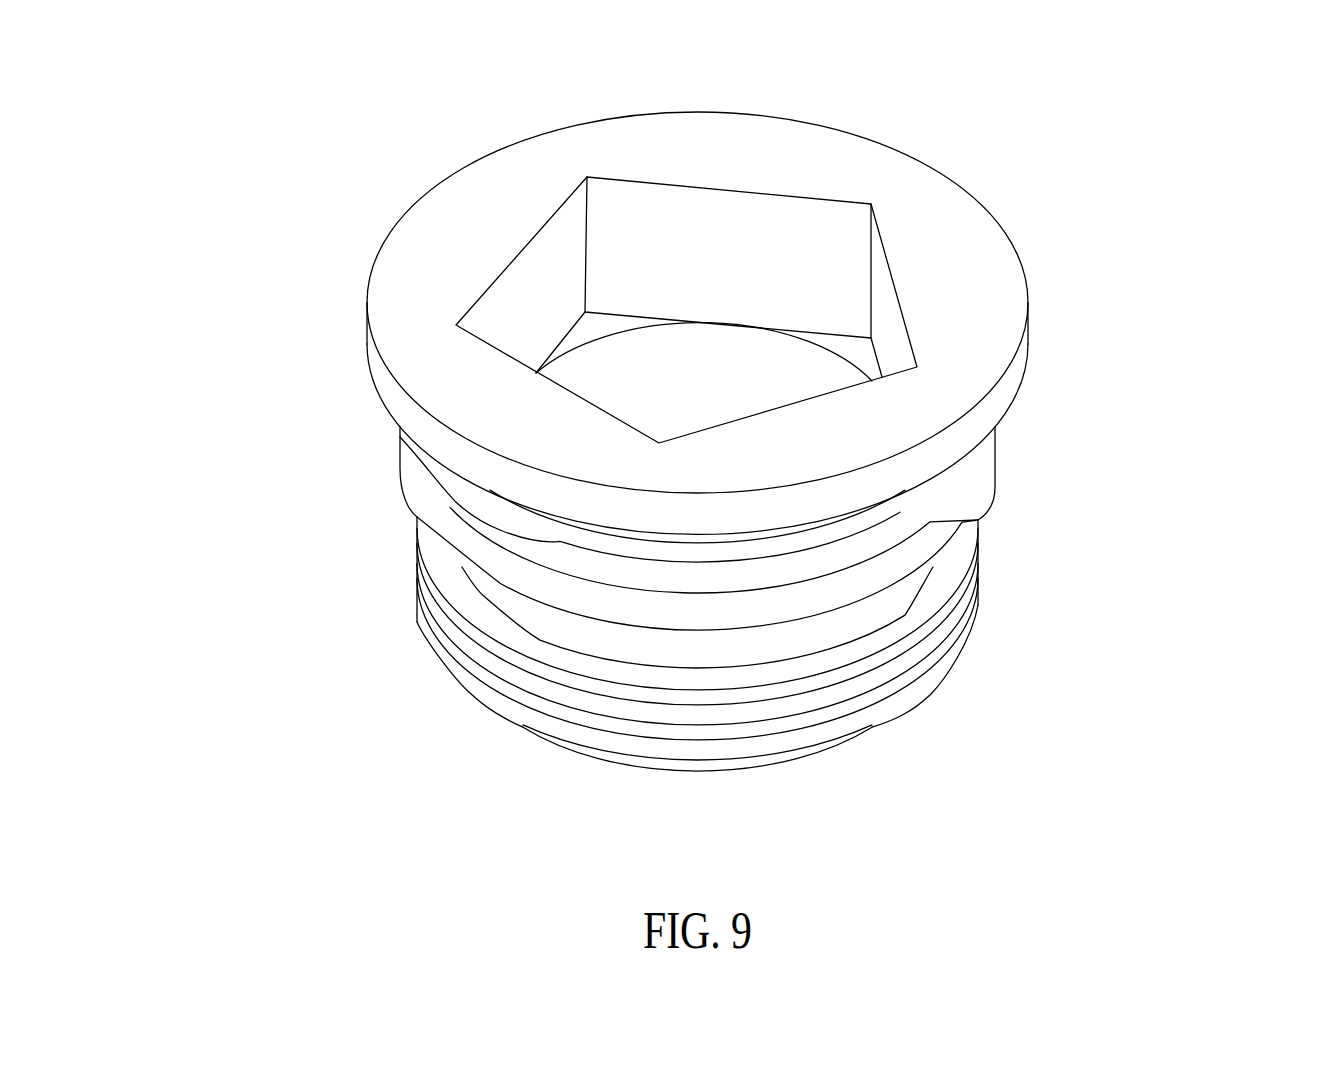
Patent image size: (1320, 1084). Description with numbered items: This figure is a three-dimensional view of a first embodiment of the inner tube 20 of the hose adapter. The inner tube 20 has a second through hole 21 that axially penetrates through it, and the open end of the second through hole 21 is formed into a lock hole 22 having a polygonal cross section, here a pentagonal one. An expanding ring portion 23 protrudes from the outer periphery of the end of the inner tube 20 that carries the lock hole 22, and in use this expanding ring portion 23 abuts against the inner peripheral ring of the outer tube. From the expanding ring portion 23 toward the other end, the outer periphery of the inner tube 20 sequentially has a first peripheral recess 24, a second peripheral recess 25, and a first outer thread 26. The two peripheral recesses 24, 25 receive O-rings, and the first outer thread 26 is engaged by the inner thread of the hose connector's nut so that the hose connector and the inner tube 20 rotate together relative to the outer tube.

The inner tube 20 is at (360, 220).
The second through hole 21 is at (712, 378).
The lock hole 22 is at (790, 253).
The expanding ring portion 23 is at (1018, 365).
The first peripheral recess 24 is at (507, 510).
The second peripheral recess 25 is at (517, 612).
The first outer thread 26 is at (915, 652).